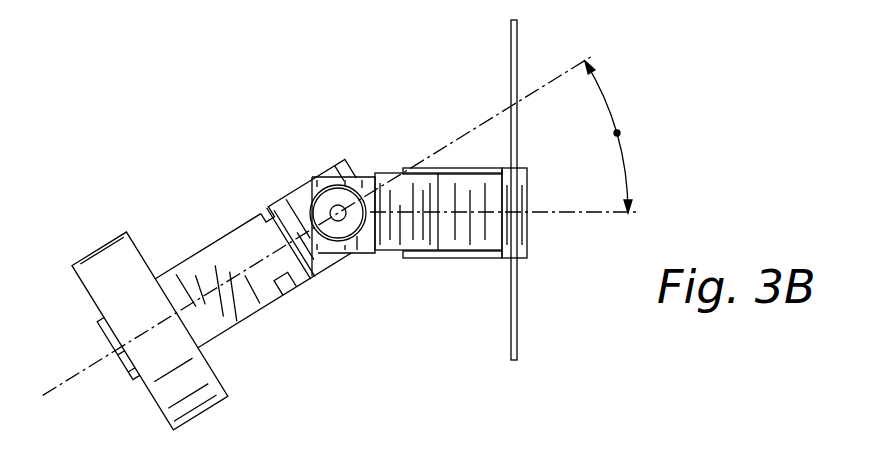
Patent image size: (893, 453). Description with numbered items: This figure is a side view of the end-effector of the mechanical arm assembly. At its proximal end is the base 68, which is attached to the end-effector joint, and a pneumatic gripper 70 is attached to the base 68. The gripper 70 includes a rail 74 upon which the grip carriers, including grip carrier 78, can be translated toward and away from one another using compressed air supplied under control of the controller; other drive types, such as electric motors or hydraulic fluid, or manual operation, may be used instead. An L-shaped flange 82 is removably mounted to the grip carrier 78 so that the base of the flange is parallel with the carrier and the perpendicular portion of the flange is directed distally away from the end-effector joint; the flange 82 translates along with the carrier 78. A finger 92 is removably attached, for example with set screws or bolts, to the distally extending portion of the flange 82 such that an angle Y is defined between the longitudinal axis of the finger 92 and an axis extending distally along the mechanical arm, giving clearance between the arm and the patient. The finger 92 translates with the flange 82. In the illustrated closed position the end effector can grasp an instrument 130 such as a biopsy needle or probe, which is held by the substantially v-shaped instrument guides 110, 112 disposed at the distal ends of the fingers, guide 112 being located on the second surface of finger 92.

The base 68 is at (100, 247).
The pneumatic gripper 70 is at (250, 316).
The rail 74 is at (294, 282).
The grip carrier 78 is at (256, 226).
The L-shaped flange 82 is at (274, 193).
The finger 92 is at (390, 254).
The instrument guide 110 is at (457, 259).
The instrument guide 112 is at (477, 168).
The instrument 130 is at (511, 77).
The angle Y is at (617, 133).